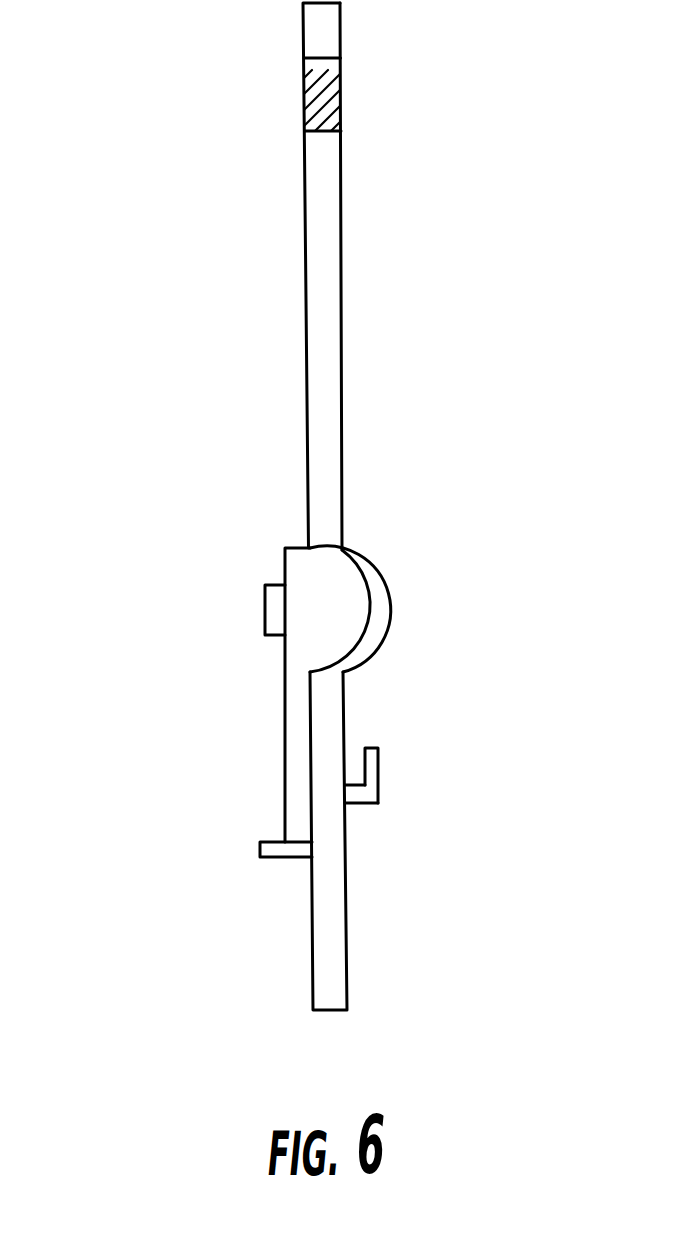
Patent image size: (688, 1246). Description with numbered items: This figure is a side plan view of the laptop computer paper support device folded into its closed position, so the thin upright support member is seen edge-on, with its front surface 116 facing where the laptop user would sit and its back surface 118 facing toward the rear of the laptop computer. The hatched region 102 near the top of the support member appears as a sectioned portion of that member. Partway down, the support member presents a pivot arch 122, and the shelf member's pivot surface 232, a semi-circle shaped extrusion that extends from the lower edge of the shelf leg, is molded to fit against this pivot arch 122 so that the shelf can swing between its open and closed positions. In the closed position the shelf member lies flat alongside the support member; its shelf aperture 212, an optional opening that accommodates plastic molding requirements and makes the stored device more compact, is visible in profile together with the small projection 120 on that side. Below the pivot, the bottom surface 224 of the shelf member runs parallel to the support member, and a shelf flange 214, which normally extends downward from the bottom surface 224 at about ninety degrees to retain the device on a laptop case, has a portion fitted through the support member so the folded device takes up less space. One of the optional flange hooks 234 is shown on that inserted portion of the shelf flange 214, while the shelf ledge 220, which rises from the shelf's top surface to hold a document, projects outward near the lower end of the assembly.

The cross-section of panel 102 is at (306, 87).
The front surface 116 is at (317, 322).
The back surface 118 is at (342, 265).
The tab 120 is at (265, 618).
The pivot arch 122 is at (373, 590).
The shelf aperture 212 is at (295, 775).
The shelf flange 214 is at (365, 805).
The shelf ledge 220 is at (282, 858).
The bottom surface 224 is at (328, 723).
The pivot surface 232 is at (335, 575).
The flange hooks 234 is at (373, 770).